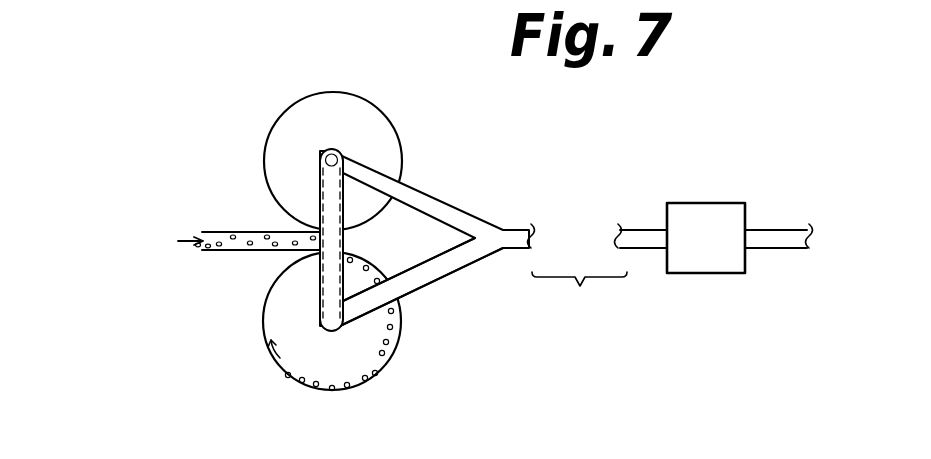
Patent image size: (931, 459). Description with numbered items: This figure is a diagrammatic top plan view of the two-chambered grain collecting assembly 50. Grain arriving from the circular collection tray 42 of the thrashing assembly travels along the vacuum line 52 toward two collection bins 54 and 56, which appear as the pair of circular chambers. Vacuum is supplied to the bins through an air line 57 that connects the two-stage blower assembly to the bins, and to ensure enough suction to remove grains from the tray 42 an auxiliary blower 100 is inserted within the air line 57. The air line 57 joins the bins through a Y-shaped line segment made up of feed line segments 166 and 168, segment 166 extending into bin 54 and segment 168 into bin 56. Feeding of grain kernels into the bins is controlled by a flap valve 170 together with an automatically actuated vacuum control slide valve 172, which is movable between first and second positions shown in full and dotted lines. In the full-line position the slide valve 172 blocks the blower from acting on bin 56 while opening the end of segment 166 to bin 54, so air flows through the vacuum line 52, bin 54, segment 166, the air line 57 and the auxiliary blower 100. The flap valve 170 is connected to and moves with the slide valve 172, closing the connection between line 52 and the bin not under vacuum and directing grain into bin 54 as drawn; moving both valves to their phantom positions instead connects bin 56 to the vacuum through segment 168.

The grain collecting assembly 50 is at (421, 113).
The vacuum line 52 is at (222, 210).
The collection bin 54 is at (398, 351).
The collection bin 56 is at (312, 92).
The air line 57 is at (635, 232).
The auxiliary blower 100 is at (728, 245).
The feed line segment 166 is at (447, 280).
The feed line segment 168 is at (436, 202).
The flap valve 170 is at (344, 245).
The vacuum control slide valve 172 is at (323, 190).
The collection tray 42 is at (130, 258).